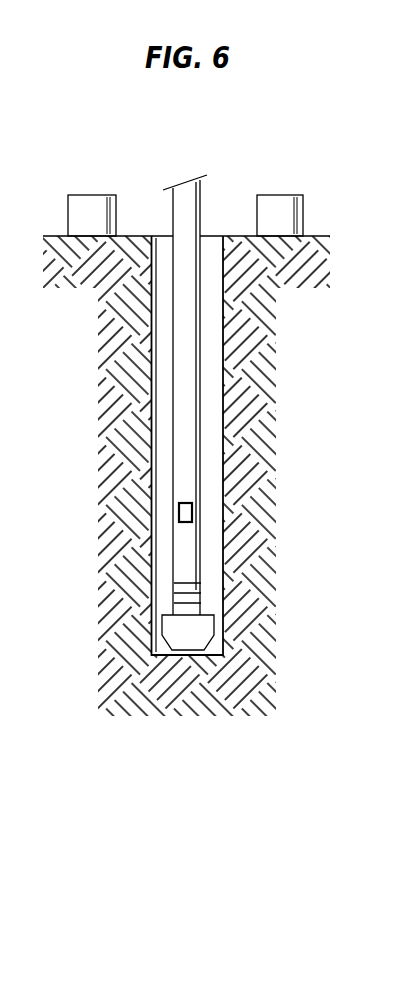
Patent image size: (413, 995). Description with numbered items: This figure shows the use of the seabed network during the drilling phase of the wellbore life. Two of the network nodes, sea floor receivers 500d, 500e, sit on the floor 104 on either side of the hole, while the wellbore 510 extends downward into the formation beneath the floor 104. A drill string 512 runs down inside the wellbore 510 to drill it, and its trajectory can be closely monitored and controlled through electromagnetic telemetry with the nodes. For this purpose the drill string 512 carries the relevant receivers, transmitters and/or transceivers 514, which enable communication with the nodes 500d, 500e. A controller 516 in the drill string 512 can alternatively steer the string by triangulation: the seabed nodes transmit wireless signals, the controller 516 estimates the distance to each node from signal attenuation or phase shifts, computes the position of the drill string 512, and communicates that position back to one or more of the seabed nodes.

The floor 104 is at (317, 236).
The network node 500d is at (90, 195).
The network node 500e is at (268, 195).
The wellbore 510 is at (223, 363).
The drill string 512 is at (200, 393).
The transceiver 514 is at (202, 592).
The controller 516 is at (192, 507).